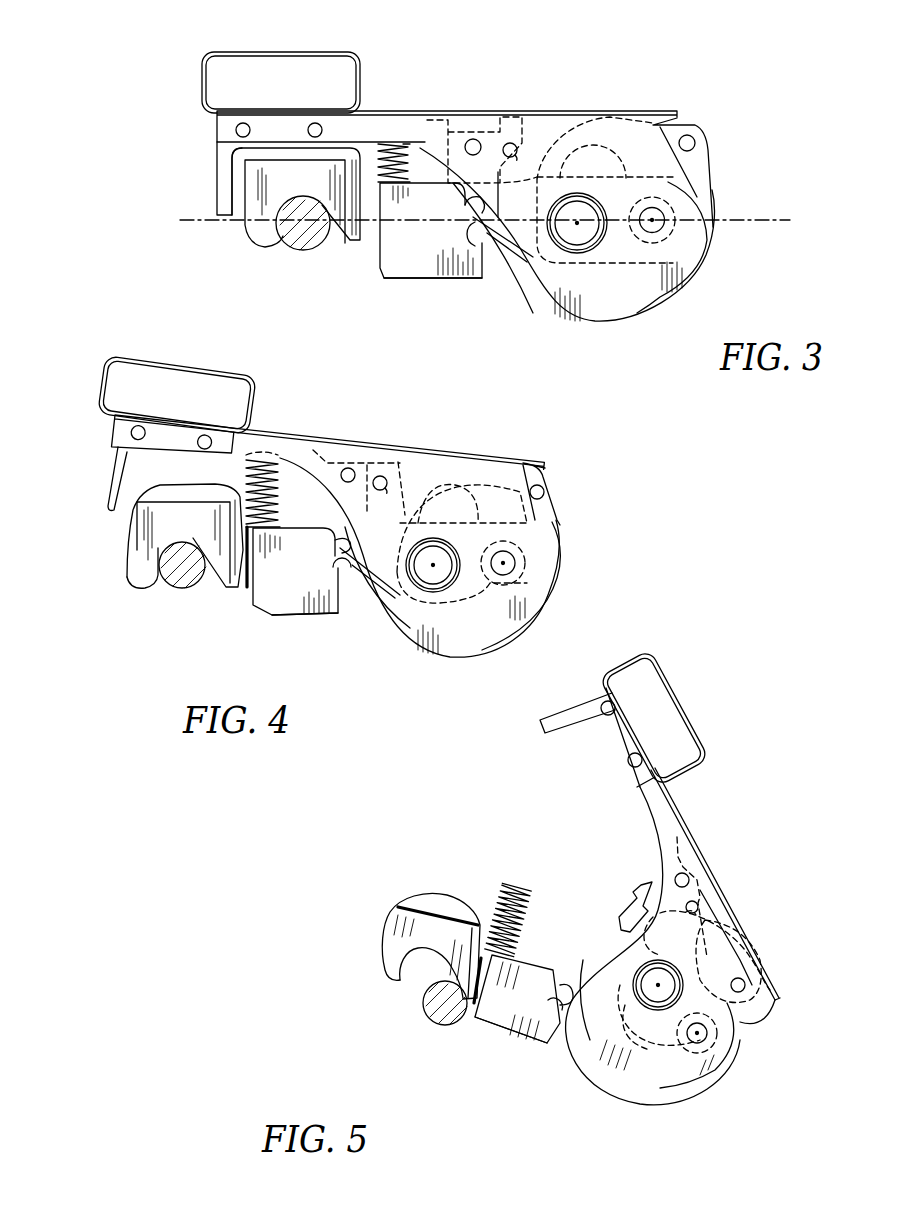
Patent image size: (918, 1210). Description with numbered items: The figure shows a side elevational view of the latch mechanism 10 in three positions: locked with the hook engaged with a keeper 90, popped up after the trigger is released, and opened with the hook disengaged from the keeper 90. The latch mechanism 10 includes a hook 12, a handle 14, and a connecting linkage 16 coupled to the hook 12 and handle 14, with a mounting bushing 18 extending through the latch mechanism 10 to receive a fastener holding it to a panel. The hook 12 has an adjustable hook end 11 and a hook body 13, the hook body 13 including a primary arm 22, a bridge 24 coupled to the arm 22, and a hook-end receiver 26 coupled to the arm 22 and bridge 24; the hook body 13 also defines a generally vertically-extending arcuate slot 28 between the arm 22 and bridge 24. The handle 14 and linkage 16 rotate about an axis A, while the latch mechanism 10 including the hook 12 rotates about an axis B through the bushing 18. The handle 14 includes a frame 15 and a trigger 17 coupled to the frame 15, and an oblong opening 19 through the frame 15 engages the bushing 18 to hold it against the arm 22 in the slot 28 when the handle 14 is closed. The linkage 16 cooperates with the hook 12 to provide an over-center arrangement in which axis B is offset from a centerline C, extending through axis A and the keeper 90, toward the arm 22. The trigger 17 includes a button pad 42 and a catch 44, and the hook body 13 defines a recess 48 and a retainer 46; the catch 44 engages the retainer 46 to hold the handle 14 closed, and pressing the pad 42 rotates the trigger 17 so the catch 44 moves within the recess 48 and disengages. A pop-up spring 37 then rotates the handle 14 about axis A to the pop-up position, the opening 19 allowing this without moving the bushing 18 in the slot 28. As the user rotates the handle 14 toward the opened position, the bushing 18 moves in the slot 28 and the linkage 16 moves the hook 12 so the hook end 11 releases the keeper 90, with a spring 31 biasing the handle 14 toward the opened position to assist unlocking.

In FIG. 3, the latch mechanism 10 is at (154, 67).
In FIG. 4, the latch mechanism 10 is at (90, 356).
In FIG. 5, the latch mechanism 10 is at (737, 691).
In FIG. 3, the adjustable hook end 11 is at (250, 241).
In FIG. 4, the adjustable hook end 11 is at (130, 583).
In FIG. 5, the adjustable hook end 11 is at (378, 968).
In FIG. 3, the hook 12 is at (231, 228).
In FIG. 4, the hook 12 is at (137, 567).
In FIG. 5, the hook 12 is at (363, 989).
In FIG. 3, the hook body 13 is at (393, 283).
In FIG. 4, the hook body 13 is at (275, 628).
In FIG. 5, the hook body 13 is at (487, 1043).
In FIG. 3, the handle 14 is at (423, 106).
In FIG. 4, the handle 14 is at (310, 425).
In FIG. 5, the handle 14 is at (700, 821).
In FIG. 3, the frame 15 is at (658, 134).
In FIG. 4, the frame 15 is at (517, 478).
In FIG. 5, the frame 15 is at (718, 975).
In FIG. 3, the connecting linkage 16 is at (707, 194).
In FIG. 4, the connecting linkage 16 is at (562, 535).
In FIG. 5, the connecting linkage 16 is at (745, 1047).
In FIG. 3, the trigger 17 is at (486, 128).
In FIG. 4, the trigger 17 is at (339, 448).
In FIG. 5, the trigger 17 is at (700, 862).
In FIG. 3, the mounting bushing 18 is at (597, 236).
In FIG. 4, the mounting bushing 18 is at (462, 579).
In FIG. 5, the mounting bushing 18 is at (668, 997).
In FIG. 3, the oblong opening 19 is at (578, 258).
In FIG. 4, the oblong opening 19 is at (433, 532).
In FIG. 5, the oblong opening 19 is at (677, 952).
In FIG. 3, the primary arm 22 is at (597, 320).
In FIG. 4, the primary arm 22 is at (461, 655).
In FIG. 5, the primary arm 22 is at (639, 1088).
In FIG. 3, the bridge 24 is at (590, 123).
In FIG. 4, the bridge 24 is at (448, 464).
In FIG. 5, the bridge 24 is at (641, 944).
In FIG. 3, the hook-end receiver 26 is at (423, 281).
In FIG. 4, the hook-end receiver 26 is at (289, 626).
In FIG. 5, the hook-end receiver 26 is at (512, 1046).
In FIG. 3, the arcuate slot 28 is at (596, 163).
In FIG. 4, the arcuate slot 28 is at (457, 505).
In FIG. 5, the arcuate slot 28 is at (630, 1048).
In FIG. 5, the spring 31 is at (760, 946).
In FIG. 3, the pop-up spring 37 is at (393, 141).
In FIG. 4, the pop-up spring 37 is at (271, 473).
In FIG. 5, the pop-up spring 37 is at (500, 896).
In FIG. 3, the button pad 42 is at (512, 126).
In FIG. 4, the button pad 42 is at (365, 446).
In FIG. 5, the button pad 42 is at (686, 868).
In FIG. 3, the catch 44 is at (500, 231).
In FIG. 4, the catch 44 is at (366, 580).
In FIG. 5, the catch 44 is at (610, 912).
In FIG. 3, the retainer 46 is at (476, 232).
In FIG. 4, the retainer 46 is at (344, 574).
In FIG. 5, the retainer 46 is at (554, 1012).
In FIG. 3, the recess 48 is at (522, 245).
In FIG. 4, the recess 48 is at (388, 600).
In FIG. 5, the recess 48 is at (589, 1012).
In FIG. 3, the keeper 90 is at (303, 236).
In FIG. 4, the keeper 90 is at (190, 580).
In FIG. 5, the keeper 90 is at (443, 1012).
In FIG. 3, the axis A is at (655, 221).
In FIG. 4, the axis A is at (506, 563).
In FIG. 5, the axis A is at (700, 1035).
In FIG. 3, the axis B is at (580, 228).
In FIG. 4, the axis B is at (436, 570).
In FIG. 5, the axis B is at (661, 990).
In FIG. 3, the centerline C is at (789, 224).